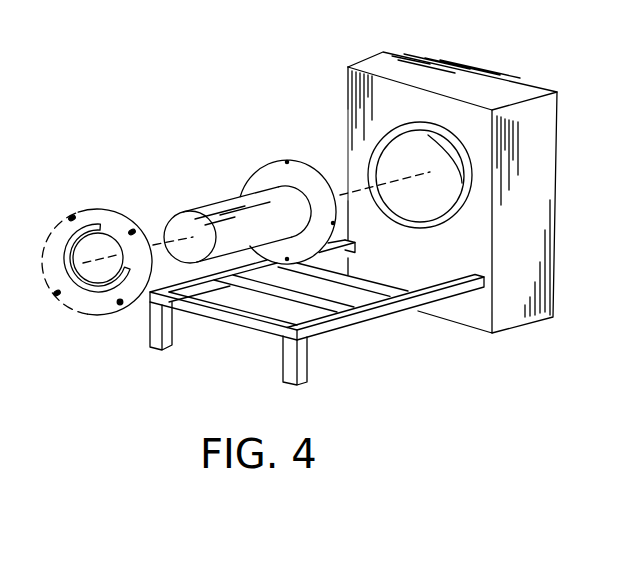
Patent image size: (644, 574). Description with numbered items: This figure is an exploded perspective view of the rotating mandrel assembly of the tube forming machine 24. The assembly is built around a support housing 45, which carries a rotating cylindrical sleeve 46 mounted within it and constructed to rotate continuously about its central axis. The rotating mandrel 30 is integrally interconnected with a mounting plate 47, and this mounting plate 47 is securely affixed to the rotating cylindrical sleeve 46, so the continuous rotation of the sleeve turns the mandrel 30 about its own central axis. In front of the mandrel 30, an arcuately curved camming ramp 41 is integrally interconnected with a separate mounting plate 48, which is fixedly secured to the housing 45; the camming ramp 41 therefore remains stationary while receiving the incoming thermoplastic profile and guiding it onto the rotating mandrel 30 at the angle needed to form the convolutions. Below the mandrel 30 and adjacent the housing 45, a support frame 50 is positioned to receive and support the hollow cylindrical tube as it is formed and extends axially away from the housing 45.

The tube forming machine 24 is at (557, 134).
The rotating mandrel 30 is at (210, 201).
The camming ramp 41 is at (95, 283).
The support housing 45 is at (346, 151).
The rotating cylindrical sleeve 46 is at (400, 155).
The mounting plate 47 is at (261, 168).
The mounting plate 48 is at (121, 310).
The support frame 50 is at (368, 327).